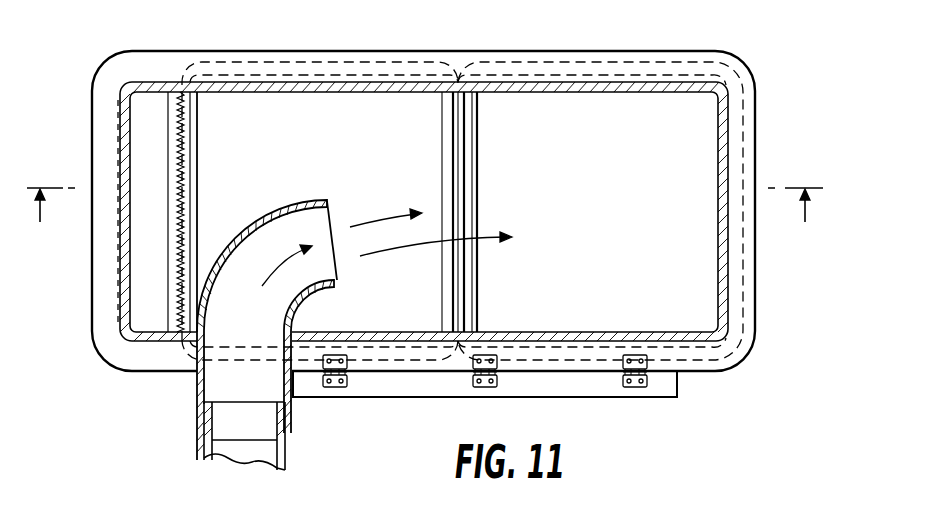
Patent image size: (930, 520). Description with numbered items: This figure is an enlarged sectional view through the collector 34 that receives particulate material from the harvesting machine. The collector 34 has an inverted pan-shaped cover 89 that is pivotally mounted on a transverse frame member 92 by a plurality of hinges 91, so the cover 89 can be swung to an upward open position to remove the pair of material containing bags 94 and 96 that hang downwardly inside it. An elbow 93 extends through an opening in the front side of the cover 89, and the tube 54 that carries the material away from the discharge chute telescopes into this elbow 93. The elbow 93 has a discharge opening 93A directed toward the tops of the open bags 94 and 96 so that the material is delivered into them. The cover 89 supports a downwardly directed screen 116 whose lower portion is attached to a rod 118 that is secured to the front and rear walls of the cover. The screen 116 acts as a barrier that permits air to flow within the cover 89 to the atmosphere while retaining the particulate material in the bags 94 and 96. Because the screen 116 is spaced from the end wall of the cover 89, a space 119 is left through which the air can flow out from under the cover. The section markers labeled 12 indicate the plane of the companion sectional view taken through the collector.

The section line 12- 12 is at (425, 219).
The collector 34 is at (755, 60).
The tube 54 is at (203, 450).
The cover 89 is at (108, 125).
The hinges 91 is at (335, 388).
The transverse frame member 92 is at (558, 382).
The elbow 93 is at (196, 385).
The discharge opening 93A is at (333, 210).
The material containing bag 94 is at (450, 140).
The material containing bag 96 is at (470, 156).
The screen 116 is at (178, 118).
The rod 118 is at (172, 270).
The space 119 is at (110, 233).